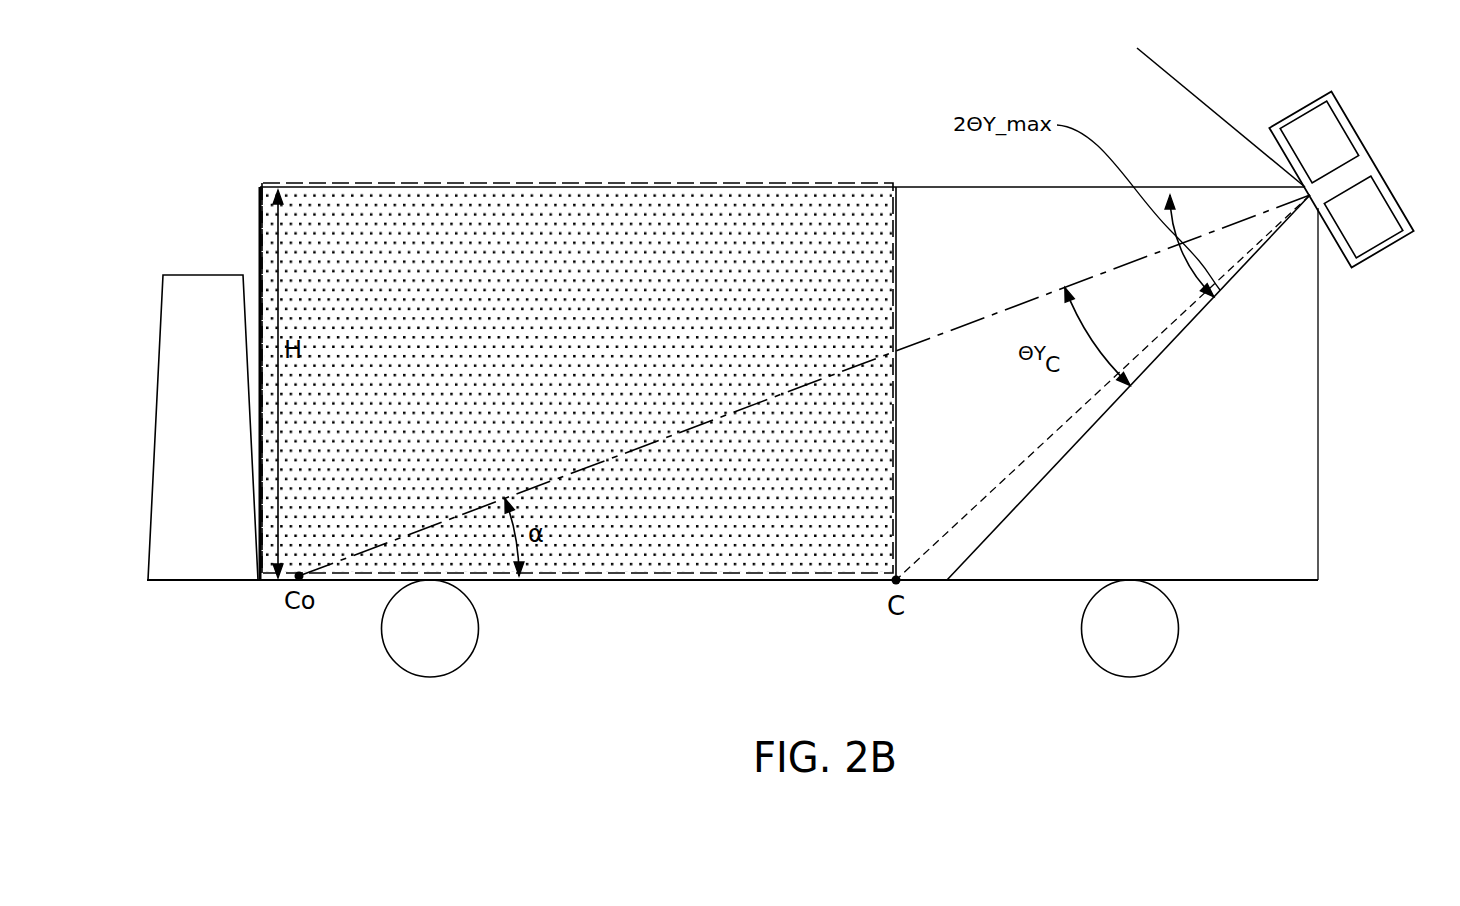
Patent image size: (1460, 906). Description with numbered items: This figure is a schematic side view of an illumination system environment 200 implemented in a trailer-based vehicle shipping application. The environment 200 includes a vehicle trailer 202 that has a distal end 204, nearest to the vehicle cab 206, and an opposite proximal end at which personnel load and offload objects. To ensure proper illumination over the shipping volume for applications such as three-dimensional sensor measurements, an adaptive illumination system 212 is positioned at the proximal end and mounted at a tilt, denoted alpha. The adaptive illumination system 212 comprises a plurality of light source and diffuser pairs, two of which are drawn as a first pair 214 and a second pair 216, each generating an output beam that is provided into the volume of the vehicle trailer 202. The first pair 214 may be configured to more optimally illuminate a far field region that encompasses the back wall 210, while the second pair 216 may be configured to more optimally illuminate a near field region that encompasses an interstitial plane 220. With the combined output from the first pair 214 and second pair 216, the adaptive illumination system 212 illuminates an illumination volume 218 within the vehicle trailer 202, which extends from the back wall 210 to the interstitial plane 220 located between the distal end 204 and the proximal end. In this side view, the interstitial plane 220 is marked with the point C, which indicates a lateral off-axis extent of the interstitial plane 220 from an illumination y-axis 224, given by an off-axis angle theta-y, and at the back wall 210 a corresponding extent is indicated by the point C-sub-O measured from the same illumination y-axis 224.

The illumination system environment 200 is at (222, 130).
The vehicle trailer 202 is at (538, 184).
The distal end 204 is at (259, 256).
The vehicle cab 206 is at (171, 431).
The back wall 210 is at (263, 470).
The adaptive illumination system 212 is at (1358, 179).
The first pair 214 is at (1383, 156).
The second pair 216 is at (1319, 142).
The illumination volume 218 is at (570, 358).
The interstitial plane 220 is at (908, 251).
The illumination y-axis 224 is at (757, 414).